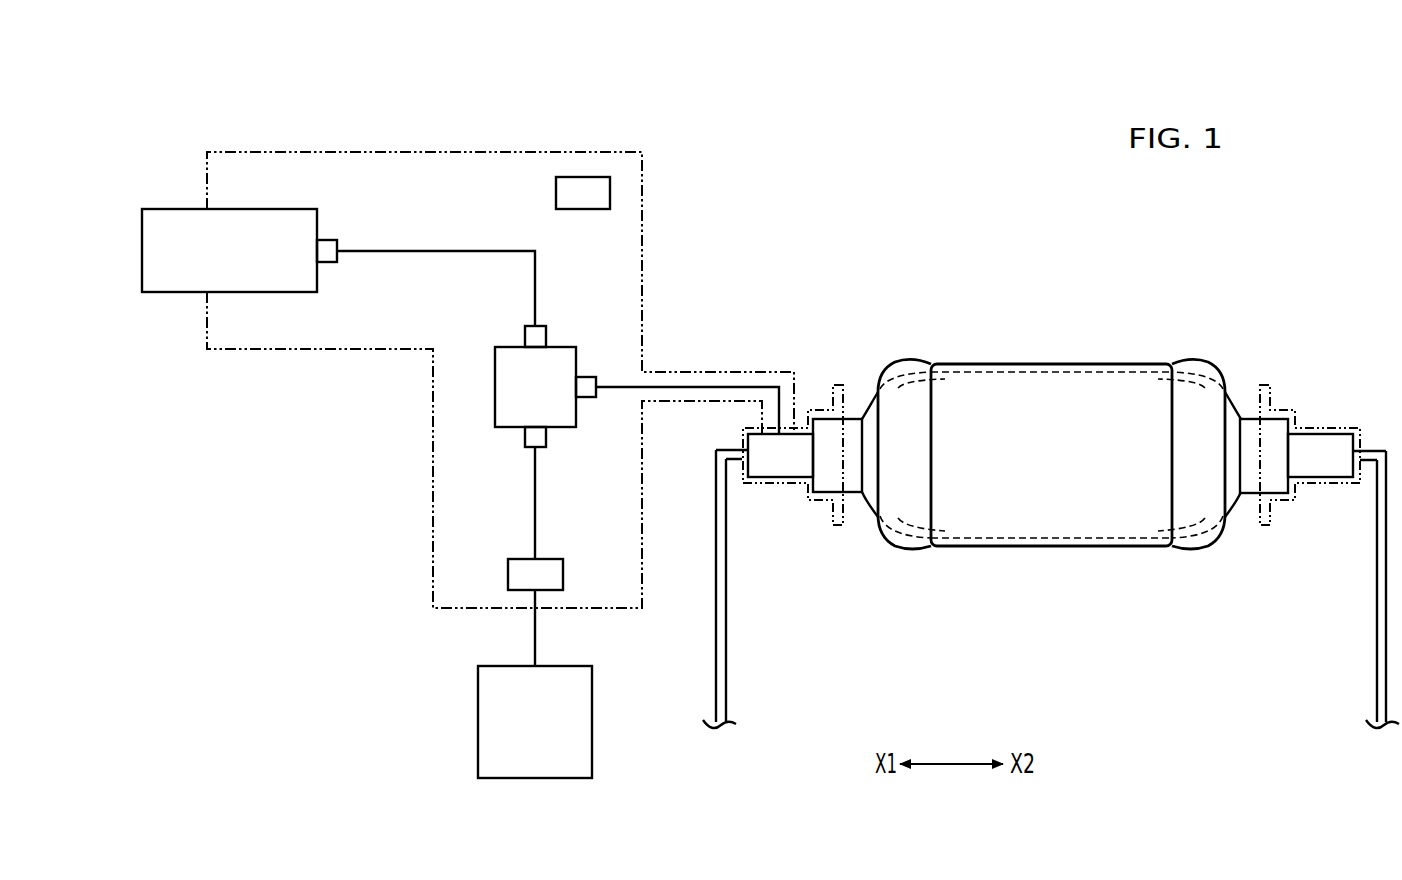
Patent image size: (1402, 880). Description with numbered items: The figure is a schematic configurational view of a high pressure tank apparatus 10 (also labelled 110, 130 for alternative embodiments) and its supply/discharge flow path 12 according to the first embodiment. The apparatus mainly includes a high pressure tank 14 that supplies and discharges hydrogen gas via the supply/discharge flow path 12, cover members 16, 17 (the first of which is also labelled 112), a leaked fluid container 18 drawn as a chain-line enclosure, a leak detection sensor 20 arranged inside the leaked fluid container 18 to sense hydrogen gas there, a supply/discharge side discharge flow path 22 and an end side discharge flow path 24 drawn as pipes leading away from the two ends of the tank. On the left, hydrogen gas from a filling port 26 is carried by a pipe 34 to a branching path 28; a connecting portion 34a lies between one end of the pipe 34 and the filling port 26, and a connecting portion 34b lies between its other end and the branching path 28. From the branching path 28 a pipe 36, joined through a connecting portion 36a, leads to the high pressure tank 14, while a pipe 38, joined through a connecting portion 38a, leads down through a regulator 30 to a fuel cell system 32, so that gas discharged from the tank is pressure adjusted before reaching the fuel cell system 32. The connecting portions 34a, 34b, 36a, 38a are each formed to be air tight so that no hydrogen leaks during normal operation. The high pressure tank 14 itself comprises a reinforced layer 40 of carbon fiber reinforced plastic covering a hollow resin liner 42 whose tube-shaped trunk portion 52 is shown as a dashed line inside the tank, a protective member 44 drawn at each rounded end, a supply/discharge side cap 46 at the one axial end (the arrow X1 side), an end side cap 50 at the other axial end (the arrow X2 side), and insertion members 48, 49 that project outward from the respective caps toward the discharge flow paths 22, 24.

The high pressure tank apparatus 10 is at (1103, 224).
The exhaust gas sensor system (second embodiment) 110 is at (1149, 224).
The exhaust gas sensor system (third embodiment) 130 is at (1198, 224).
The supply/discharge flow path 12 is at (409, 232).
The high pressure tank 14 is at (1051, 445).
The cover member 16 is at (802, 449).
The upstream connecting portion (second embodiment) 112 is at (809, 568).
The cover member 17 is at (1301, 446).
The leaked fluid container 18 is at (645, 180).
The leak detection sensor 20 is at (591, 210).
The supply/discharge side discharge flow path 22 is at (728, 638).
The end side discharge flow path 24 is at (1376, 636).
The filling port 26 is at (172, 208).
The branching path 28 is at (494, 388).
The regulator 30 is at (509, 559).
The fuel cell system 32 is at (585, 686).
The pipe 34 is at (397, 253).
The connecting portion 34a is at (330, 239).
The connecting portion 34b is at (524, 331).
The pipe 36 is at (728, 378).
The connecting portion 36a is at (585, 376).
The pipe 38 is at (538, 495).
The connecting portion 38a is at (524, 441).
The reinforced layer 40 is at (975, 363).
The liner 42 is at (988, 528).
The protective member 44 is at (900, 360).
The supply/discharge side cap 46 is at (851, 414).
The insertion member 48 is at (770, 467).
The insertion member 49 is at (1319, 466).
The end side cap 50 is at (1248, 414).
The trunk portion 52 is at (1047, 539).